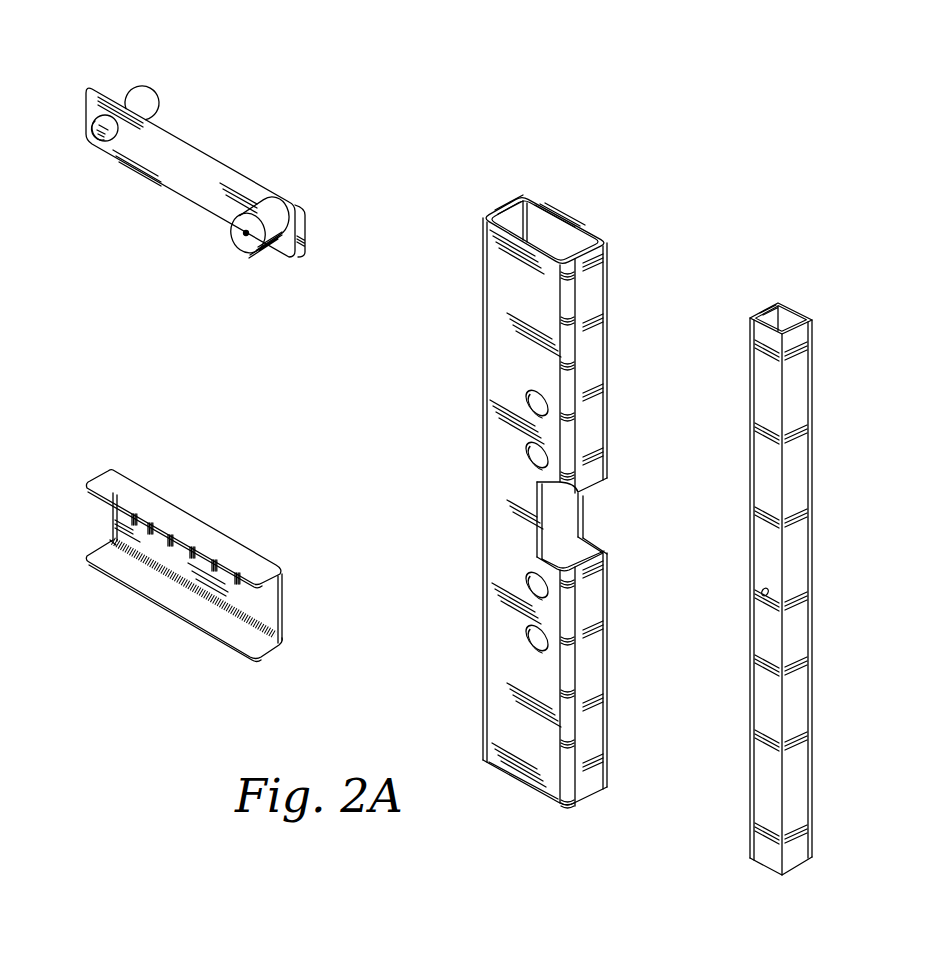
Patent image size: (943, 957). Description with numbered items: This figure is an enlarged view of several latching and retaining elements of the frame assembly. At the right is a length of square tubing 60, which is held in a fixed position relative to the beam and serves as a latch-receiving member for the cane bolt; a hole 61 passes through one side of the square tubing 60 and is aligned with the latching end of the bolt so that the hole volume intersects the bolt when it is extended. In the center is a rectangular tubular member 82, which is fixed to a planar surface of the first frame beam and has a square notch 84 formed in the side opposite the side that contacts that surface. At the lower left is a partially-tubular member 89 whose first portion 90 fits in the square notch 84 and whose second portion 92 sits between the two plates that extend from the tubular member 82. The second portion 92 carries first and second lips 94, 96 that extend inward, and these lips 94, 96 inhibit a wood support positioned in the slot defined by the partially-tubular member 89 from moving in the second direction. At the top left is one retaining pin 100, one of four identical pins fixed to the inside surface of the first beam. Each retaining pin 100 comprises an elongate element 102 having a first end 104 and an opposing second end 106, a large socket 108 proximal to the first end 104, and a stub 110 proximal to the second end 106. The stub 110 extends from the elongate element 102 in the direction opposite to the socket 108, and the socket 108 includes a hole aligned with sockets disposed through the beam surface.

The retaining pin 100 is at (298, 80).
The elongate element 102 is at (173, 184).
The first end 104 is at (306, 236).
The second end 106 is at (88, 113).
The socket 108 is at (253, 247).
The stub 110 is at (147, 90).
The partially-tubular member 89 is at (232, 480).
The first portion 90 is at (115, 552).
The second portion 92 is at (172, 587).
The first lip 94 is at (140, 528).
The second lip 96 is at (183, 610).
The rectangular tubular member 82 is at (468, 373).
The square notch 84 is at (602, 532).
The square tubing 60 is at (735, 362).
The hole 61 is at (765, 587).